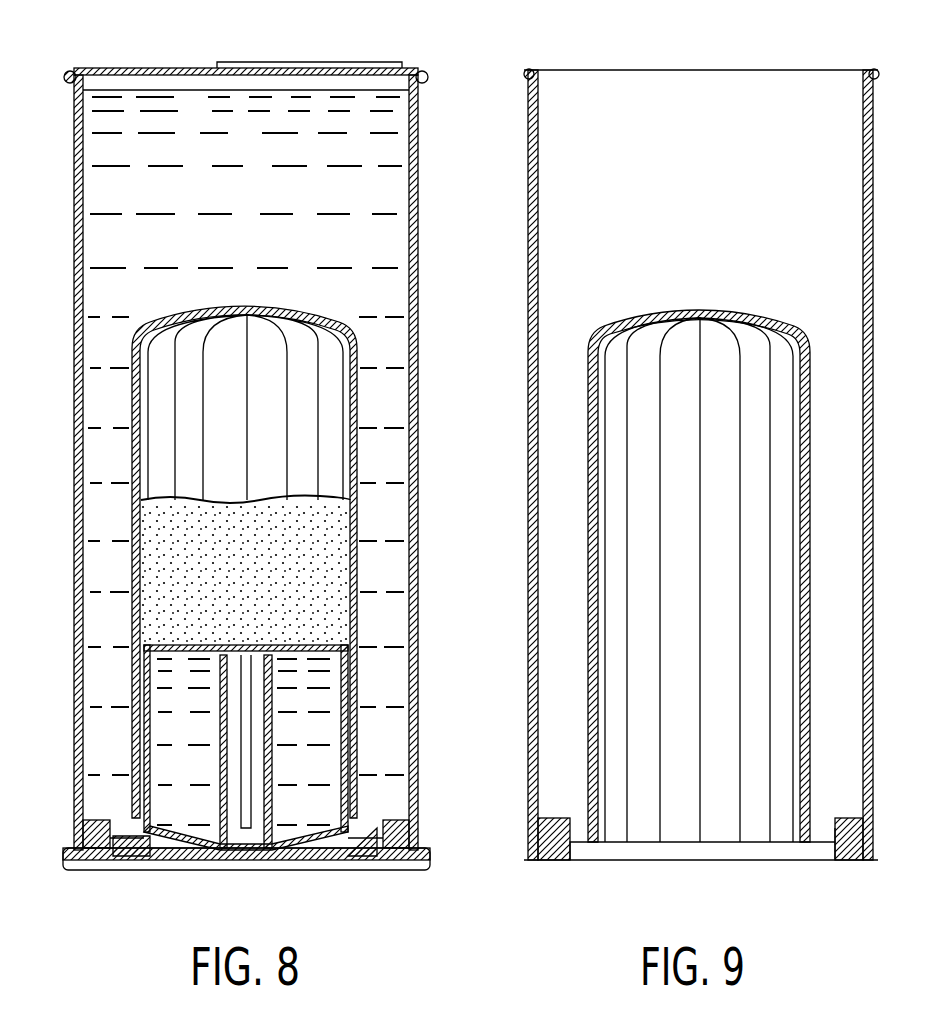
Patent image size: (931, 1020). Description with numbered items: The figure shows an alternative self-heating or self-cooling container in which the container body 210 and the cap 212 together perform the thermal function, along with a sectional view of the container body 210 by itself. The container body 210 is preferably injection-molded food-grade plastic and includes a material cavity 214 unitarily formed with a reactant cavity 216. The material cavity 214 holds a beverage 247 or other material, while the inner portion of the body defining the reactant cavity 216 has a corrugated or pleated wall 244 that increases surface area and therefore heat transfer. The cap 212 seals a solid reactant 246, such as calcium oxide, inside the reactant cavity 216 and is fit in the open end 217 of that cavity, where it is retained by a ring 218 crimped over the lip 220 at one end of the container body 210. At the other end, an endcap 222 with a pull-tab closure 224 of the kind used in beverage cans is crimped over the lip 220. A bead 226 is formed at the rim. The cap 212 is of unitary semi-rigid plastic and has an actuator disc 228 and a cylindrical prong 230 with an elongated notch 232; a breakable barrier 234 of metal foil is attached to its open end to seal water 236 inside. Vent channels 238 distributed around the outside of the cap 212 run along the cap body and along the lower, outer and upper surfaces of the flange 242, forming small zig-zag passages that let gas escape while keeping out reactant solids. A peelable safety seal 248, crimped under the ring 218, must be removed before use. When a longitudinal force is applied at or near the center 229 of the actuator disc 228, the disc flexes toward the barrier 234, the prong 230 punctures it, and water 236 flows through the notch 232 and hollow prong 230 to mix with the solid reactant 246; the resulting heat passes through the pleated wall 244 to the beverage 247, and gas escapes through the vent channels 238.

In FIG. 8, the container body 210 is at (418, 268).
In FIG. 9, the container body 210 is at (532, 600).
In FIG. 8, the cap 212 is at (175, 640).
In FIG. 8, the material cavity 214 is at (112, 247).
In FIG. 9, the material cavity 214 is at (643, 245).
In FIG. 8, the reactant cavity 216 is at (152, 412).
In FIG. 9, the reactant cavity 216 is at (640, 360).
In FIG. 8, the open end 217 is at (380, 836).
In FIG. 9, the open end 217 is at (740, 853).
In FIG. 8, the ring 218 is at (395, 870).
In FIG. 8, the lip 220 is at (80, 848).
In FIG. 9, the lip 220 is at (536, 852).
In FIG. 8, the endcap 222 is at (185, 68).
In FIG. 8, the pull-tab closure 224 is at (318, 62).
In FIG. 8, the rim bead 226 is at (74, 70).
In FIG. 9, the rim bead 226 is at (530, 68).
In FIG. 8, the actuator disc 228 is at (305, 848).
In FIG. 8, the center 229 is at (248, 852).
In FIG. 8, the cylindrical prong 230 is at (220, 723).
In FIG. 8, the elongated notch 232 is at (247, 745).
In FIG. 8, the breakable barrier 234 is at (310, 646).
In FIG. 8, the water 236 is at (328, 737).
In FIG. 8, the vent channels 238 is at (132, 698).
In FIG. 8, the flange 242 is at (112, 858).
In FIG. 8, the pleated wall 244 is at (357, 388).
In FIG. 9, the pleated wall 244 is at (750, 350).
In FIG. 8, the solid reactant 246 is at (328, 540).
In FIG. 8, the beverage 247 is at (265, 162).
In FIG. 8, the safety seal 248 is at (220, 862).